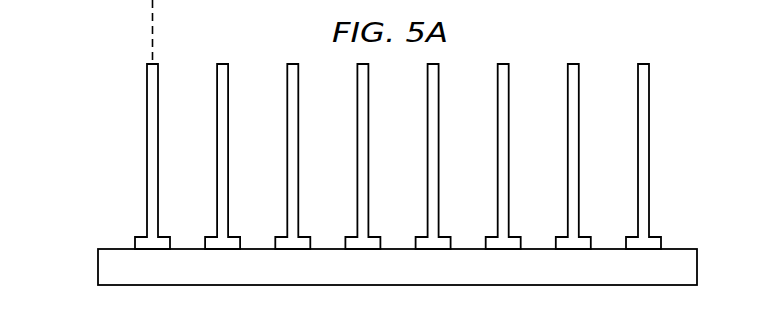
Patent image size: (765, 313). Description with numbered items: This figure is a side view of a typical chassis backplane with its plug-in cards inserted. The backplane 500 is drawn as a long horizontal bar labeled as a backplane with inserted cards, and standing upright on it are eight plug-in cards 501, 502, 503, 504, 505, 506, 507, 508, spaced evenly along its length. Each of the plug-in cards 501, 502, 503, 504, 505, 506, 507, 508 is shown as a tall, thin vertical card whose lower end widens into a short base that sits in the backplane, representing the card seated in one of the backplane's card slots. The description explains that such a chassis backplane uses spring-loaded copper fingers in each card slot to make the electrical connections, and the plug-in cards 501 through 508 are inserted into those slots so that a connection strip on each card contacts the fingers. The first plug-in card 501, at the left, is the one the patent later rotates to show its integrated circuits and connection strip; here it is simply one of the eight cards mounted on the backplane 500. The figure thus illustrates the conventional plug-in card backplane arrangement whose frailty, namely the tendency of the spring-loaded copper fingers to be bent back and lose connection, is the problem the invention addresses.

The backplane 500 is at (98, 266).
The plug-in card 501 is at (147, 150).
The plug-in card 502 is at (217, 150).
The plug-in card 503 is at (287, 150).
The plug-in card 504 is at (357, 150).
The plug-in card 505 is at (439, 149).
The plug-in card 506 is at (509, 149).
The plug-in card 507 is at (579, 149).
The plug-in card 508 is at (649, 149).